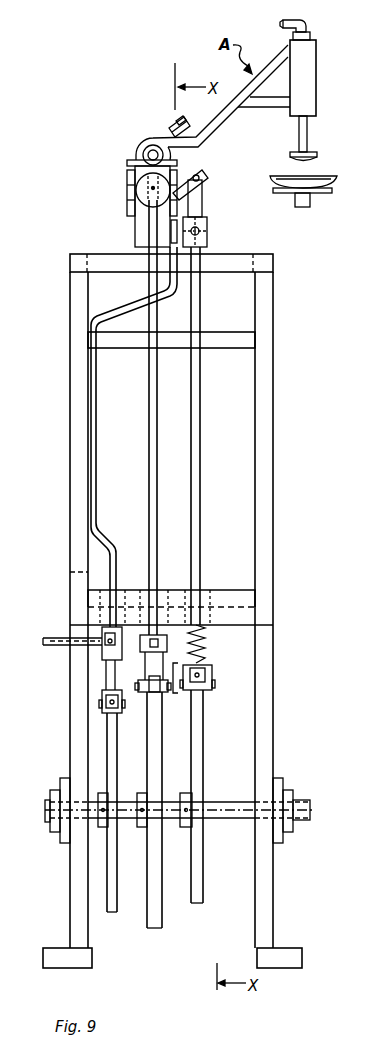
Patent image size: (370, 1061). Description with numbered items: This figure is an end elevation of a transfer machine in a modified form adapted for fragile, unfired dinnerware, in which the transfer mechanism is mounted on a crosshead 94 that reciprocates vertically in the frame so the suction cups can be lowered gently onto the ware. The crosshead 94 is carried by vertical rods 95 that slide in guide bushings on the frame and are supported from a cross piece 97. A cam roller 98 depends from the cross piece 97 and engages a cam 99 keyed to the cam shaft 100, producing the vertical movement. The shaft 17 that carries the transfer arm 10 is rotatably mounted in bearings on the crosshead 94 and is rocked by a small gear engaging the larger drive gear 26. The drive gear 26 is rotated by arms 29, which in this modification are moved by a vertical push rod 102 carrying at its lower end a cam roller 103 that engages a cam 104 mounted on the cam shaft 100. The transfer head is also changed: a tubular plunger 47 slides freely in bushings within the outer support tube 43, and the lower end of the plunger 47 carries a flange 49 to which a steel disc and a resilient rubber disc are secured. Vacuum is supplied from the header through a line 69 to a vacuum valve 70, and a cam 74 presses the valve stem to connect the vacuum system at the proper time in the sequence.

The transfer arm 10 is at (227, 123).
The shaft 17 is at (147, 151).
The drive gear 26 is at (127, 166).
The arms 29 is at (204, 176).
The outer support tube 43 is at (308, 73).
The tubular plunger 47 is at (306, 129).
The flange 49 is at (317, 153).
The line 69 is at (96, 455).
The vacuum valve 70 is at (100, 650).
The cam 74 is at (124, 745).
The crosshead 94 is at (140, 193).
The vertical rods 95 is at (157, 455).
The cross piece 97 is at (142, 667).
The cam roller 98 is at (155, 697).
The cam 99 is at (162, 760).
The cam shaft 100 is at (305, 806).
The vertical push rod 102 is at (200, 456).
The cam roller 103 is at (206, 702).
The cam 104 is at (203, 752).